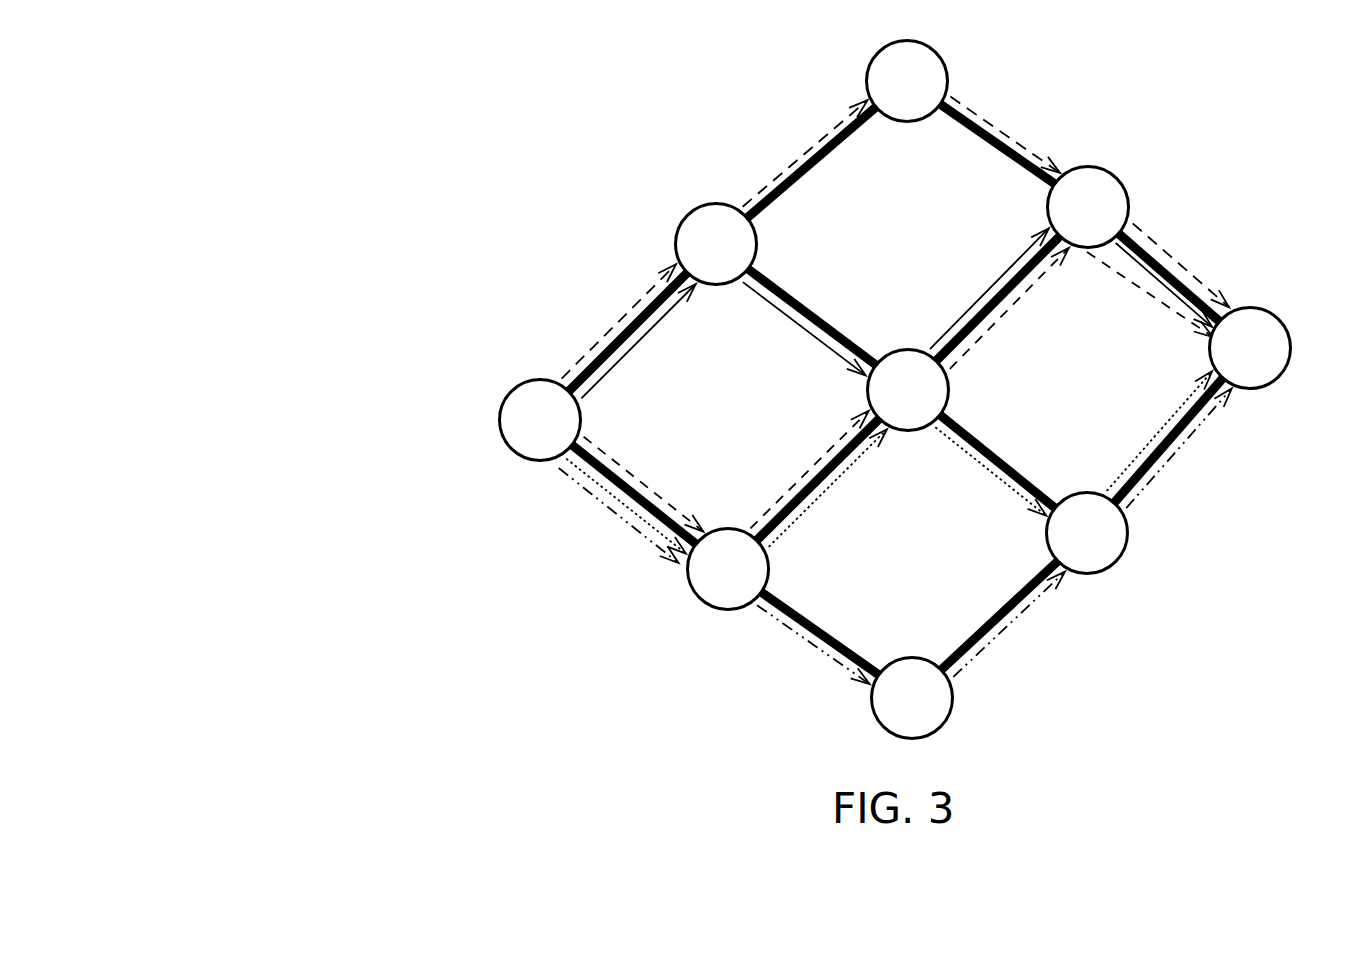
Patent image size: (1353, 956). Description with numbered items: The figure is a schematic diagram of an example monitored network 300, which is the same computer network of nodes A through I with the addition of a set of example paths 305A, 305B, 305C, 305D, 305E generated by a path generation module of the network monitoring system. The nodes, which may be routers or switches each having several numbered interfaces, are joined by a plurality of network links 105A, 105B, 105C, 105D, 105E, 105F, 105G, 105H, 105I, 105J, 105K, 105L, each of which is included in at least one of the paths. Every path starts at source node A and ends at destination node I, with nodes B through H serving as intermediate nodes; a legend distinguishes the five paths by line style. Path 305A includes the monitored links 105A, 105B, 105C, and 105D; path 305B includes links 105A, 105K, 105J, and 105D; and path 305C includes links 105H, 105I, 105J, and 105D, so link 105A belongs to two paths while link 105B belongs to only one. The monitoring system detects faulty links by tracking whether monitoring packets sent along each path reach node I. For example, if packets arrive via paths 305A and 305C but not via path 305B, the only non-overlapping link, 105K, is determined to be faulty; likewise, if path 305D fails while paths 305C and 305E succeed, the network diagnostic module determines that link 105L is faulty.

The monitored network 300 is at (553, 97).
The network link 105A is at (626, 322).
The network link 105B is at (788, 166).
The network link 105C is at (1002, 128).
The network link 105D is at (1173, 262).
The network link 105E is at (1180, 452).
The network link 105F is at (1015, 620).
The network link 105G is at (842, 640).
The network link 105H is at (642, 490).
The network link 105I is at (797, 492).
The network link 105J is at (942, 316).
The network link 105K is at (842, 303).
The network link 105L is at (1032, 488).
The path 305A is at (237, 715).
The path 305B is at (237, 748).
The path 305C is at (237, 784).
The path 305D is at (240, 816).
The path 305E is at (237, 849).